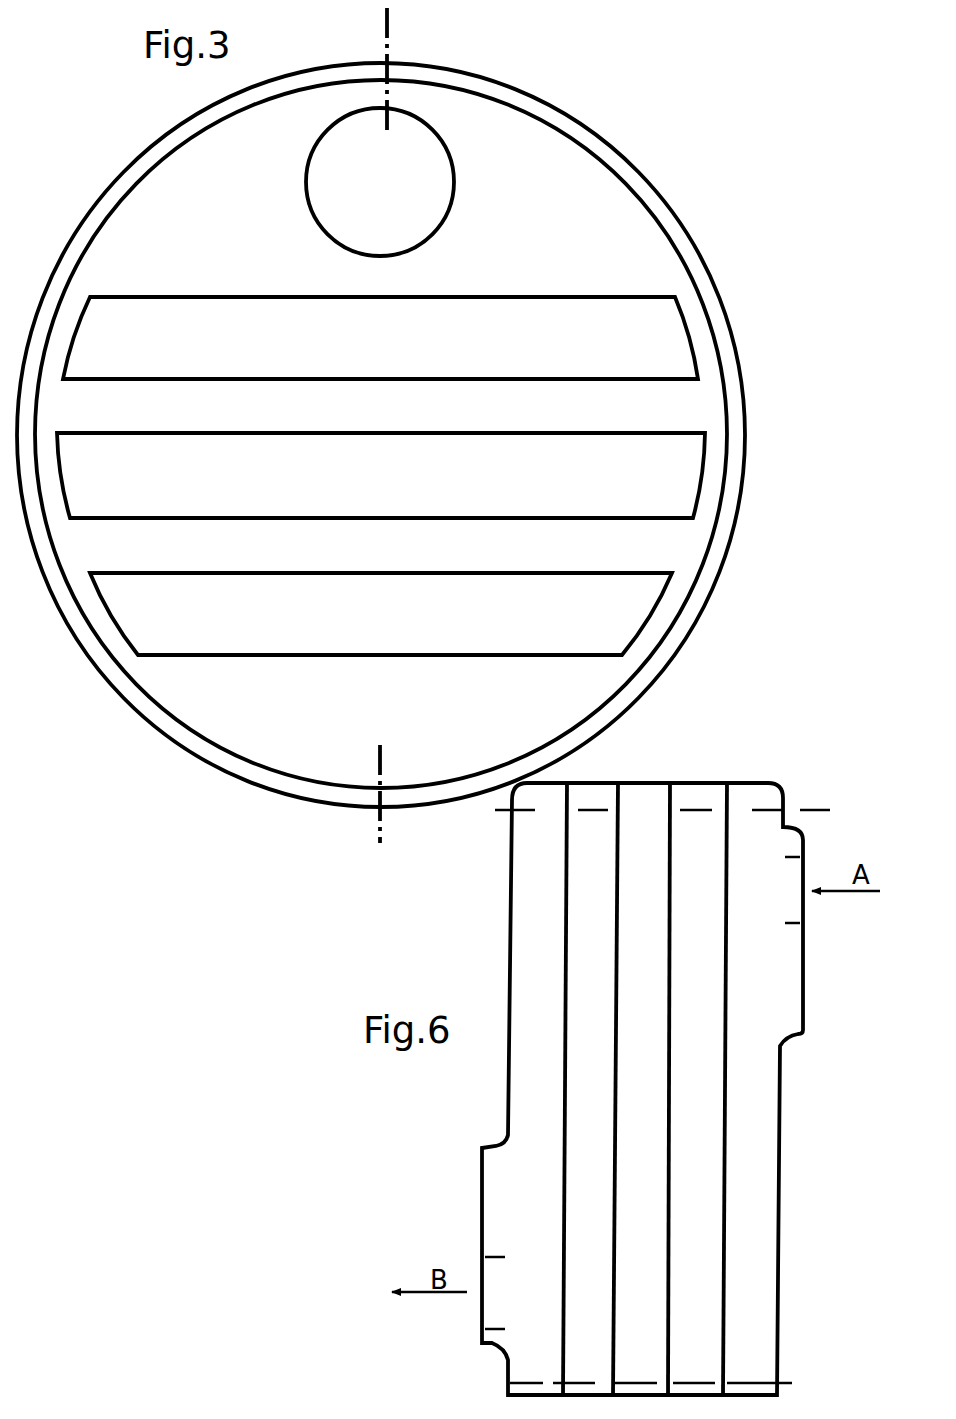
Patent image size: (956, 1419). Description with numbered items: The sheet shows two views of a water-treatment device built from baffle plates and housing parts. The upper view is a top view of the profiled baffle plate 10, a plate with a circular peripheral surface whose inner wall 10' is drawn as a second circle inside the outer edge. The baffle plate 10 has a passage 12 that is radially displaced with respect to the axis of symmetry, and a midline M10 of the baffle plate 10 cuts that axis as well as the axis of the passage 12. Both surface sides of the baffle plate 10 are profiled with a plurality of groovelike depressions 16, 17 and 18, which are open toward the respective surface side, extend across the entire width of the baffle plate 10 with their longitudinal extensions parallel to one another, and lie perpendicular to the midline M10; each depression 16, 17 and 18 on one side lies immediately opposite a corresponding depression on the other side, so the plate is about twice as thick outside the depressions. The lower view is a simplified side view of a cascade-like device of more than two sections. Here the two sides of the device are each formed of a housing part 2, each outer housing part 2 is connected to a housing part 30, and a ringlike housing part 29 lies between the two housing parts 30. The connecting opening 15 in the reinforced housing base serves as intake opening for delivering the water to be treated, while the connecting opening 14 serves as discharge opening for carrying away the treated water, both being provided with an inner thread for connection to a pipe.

In FIG. 3, the baffle plate 10 is at (415, 435).
In FIG. 3, the inner wall of nut 10' is at (423, 434).
In FIG. 3, the passage 12 is at (422, 182).
In FIG. 3, the midline of the baffle plate M10 is at (388, 20).
In FIG. 3, the groovelike depression 16 is at (600, 343).
In FIG. 3, the groovelike depression 17 is at (592, 480).
In FIG. 3, the groovelike depression 18 is at (509, 633).
In FIG. 6, the housing part 2 is at (760, 800).
In FIG. 6, the ringlike housing part 29 is at (632, 808).
In FIG. 6, the housing part 30 is at (697, 798).
In FIG. 6, the connecting opening 15 is at (793, 907).
In FIG. 6, the connecting opening 14 is at (497, 1308).